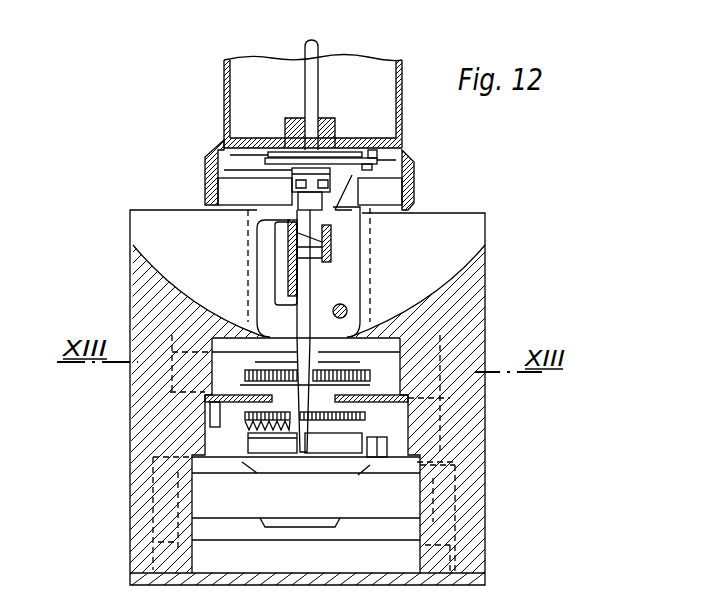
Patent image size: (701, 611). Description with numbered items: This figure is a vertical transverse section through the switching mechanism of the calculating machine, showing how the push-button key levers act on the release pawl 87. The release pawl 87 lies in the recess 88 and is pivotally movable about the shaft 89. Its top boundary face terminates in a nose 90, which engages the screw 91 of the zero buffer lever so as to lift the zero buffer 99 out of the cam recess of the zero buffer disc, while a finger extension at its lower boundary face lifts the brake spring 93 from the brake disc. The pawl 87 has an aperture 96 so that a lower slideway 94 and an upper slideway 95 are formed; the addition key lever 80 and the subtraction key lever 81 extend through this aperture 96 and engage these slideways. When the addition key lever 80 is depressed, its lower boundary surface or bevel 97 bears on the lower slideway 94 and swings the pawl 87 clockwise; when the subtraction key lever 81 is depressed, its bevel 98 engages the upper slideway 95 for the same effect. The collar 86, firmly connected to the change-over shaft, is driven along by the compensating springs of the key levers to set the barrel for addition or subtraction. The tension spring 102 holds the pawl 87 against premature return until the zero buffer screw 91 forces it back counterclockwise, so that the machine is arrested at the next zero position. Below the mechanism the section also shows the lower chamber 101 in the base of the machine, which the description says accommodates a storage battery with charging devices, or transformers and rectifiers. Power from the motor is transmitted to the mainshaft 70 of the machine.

The mainshaft 70 is at (310, 87).
The key lever 80 is at (331, 231).
The key lever 81 is at (288, 262).
The collar 86 is at (315, 255).
The release pawl 87 is at (355, 277).
The recess 88 is at (160, 232).
The shaft 89 is at (347, 312).
The nose 90 is at (352, 192).
The screw 91 is at (412, 158).
The brake spring 93 is at (249, 444).
The lower slideway 94 is at (310, 277).
The upper slideway 95 is at (290, 231).
The aperture 96 is at (283, 297).
The bevel 97 is at (306, 260).
The bevel 98 is at (290, 208).
The zero buffer 99 is at (363, 163).
The lower chamber 101 is at (405, 495).
The tension spring 102 is at (245, 426).